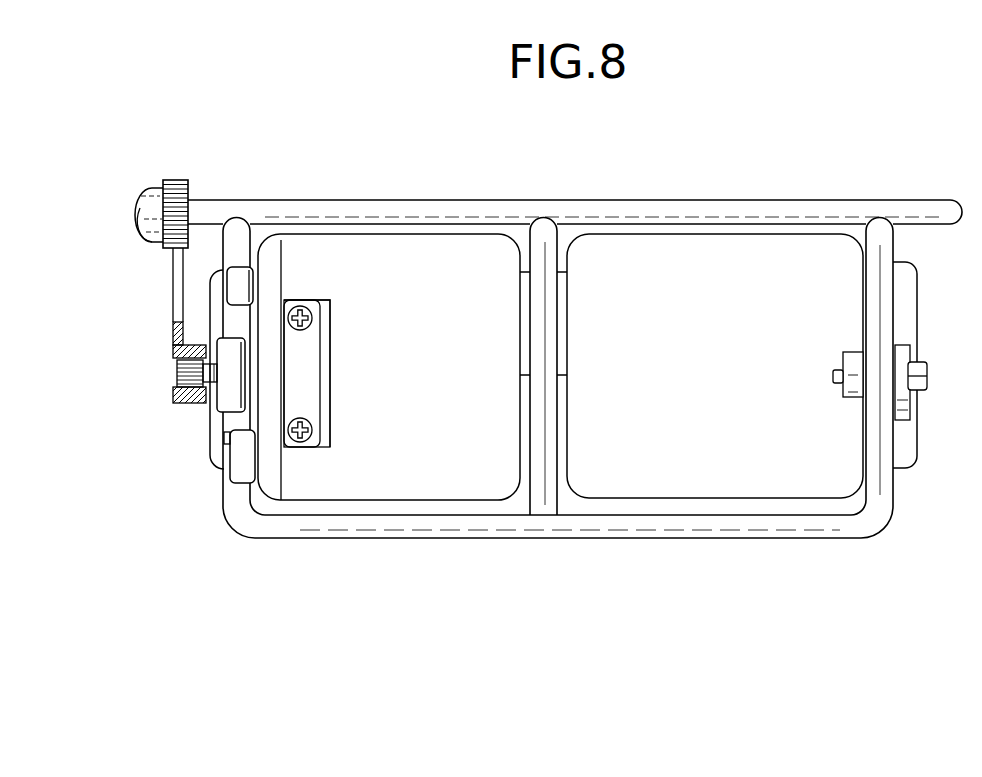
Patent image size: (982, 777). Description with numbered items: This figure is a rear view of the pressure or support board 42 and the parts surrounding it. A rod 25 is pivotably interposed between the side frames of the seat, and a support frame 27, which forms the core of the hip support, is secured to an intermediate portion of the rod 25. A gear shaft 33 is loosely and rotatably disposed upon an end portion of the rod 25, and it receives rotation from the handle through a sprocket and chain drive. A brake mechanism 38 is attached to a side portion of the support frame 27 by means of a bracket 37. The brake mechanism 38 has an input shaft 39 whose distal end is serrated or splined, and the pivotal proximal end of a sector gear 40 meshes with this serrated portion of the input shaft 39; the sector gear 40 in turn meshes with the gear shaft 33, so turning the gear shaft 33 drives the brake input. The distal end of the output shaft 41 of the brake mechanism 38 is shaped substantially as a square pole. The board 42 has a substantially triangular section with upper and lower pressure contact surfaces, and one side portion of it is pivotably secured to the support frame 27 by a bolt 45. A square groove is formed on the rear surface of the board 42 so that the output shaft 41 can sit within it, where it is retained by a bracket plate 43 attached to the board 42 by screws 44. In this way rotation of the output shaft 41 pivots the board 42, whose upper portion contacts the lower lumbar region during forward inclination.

The rod 25 is at (720, 204).
The support frame 27 is at (548, 520).
The gear shaft 33 is at (180, 178).
The bracket 37 is at (215, 445).
The brake mechanism 38 is at (230, 347).
The input shaft 39 is at (213, 393).
The sector gear 40 is at (173, 352).
The output shaft 41 is at (323, 377).
The pressure or support board 42 is at (738, 458).
The bracket plate 43 is at (312, 410).
The screws 44 is at (300, 437).
The bolt 45 is at (927, 378).